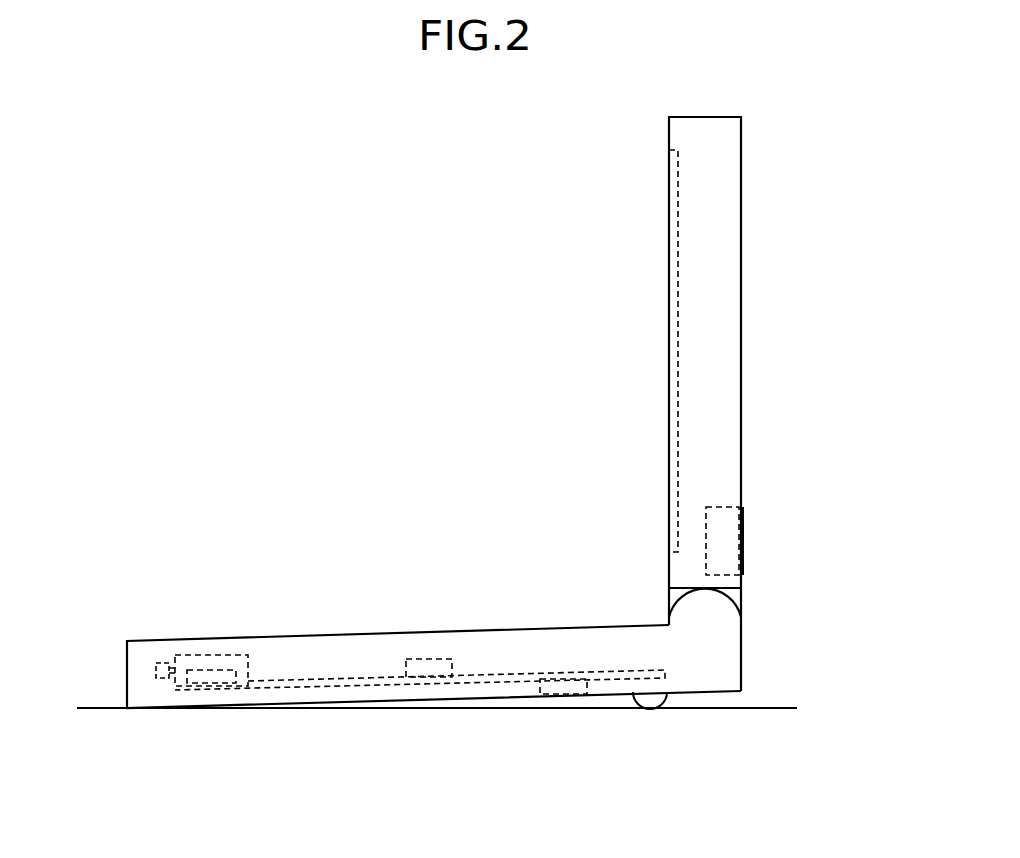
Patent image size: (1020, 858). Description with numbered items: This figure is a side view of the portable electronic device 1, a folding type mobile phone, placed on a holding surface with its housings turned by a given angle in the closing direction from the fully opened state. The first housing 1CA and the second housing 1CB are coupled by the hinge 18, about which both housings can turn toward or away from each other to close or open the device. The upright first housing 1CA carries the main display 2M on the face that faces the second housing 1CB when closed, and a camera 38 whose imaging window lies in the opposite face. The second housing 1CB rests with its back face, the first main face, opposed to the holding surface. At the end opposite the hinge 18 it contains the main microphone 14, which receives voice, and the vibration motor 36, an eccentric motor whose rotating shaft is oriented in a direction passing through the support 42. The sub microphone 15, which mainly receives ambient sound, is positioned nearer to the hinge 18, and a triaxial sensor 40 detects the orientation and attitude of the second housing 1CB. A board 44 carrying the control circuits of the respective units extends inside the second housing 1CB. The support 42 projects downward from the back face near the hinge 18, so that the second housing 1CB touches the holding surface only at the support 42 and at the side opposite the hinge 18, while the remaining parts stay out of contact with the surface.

The portable electronic device 1 is at (270, 208).
The first housing 1CA is at (728, 207).
The second housing 1CB is at (332, 652).
The main display 2M is at (668, 253).
The camera 38 is at (745, 540).
The hinge 18 is at (703, 622).
The vibration motor 36 is at (222, 655).
The main microphone 14 is at (209, 686).
The board 44 is at (345, 686).
The triaxial sensor 40 is at (430, 658).
The sub microphone 15 is at (563, 695).
The support 42 is at (652, 695).